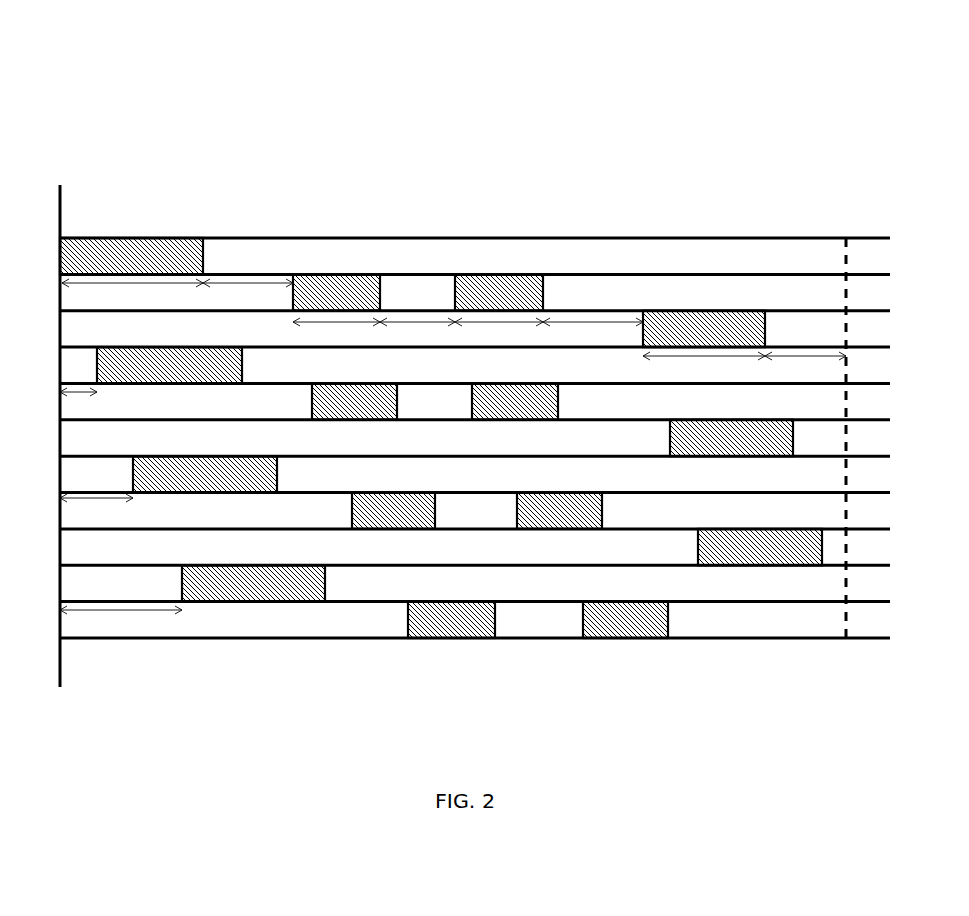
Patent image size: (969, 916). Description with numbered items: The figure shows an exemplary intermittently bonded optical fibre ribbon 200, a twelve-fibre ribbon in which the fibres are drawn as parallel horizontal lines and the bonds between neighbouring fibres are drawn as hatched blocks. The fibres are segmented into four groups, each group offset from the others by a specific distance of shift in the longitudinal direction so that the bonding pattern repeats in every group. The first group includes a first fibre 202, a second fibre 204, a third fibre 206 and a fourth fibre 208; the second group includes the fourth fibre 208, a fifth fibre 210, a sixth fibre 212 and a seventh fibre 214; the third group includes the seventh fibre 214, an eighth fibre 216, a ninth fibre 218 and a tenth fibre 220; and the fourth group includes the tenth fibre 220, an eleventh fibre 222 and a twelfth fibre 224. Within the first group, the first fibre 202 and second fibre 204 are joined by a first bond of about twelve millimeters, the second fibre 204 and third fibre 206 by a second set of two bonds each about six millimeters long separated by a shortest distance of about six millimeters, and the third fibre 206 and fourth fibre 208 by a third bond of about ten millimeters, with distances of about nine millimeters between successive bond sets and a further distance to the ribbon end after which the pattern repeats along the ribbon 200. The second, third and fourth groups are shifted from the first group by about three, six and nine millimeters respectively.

The intermittently bonded optical fibre ribbon 200 is at (449, 352).
The first fibre 202 is at (43, 245).
The second fibre 204 is at (43, 281).
The third fibre 206 is at (43, 318).
The fourth fibre 208 is at (43, 354).
The fifth fibre 210 is at (43, 390).
The sixth fibre 212 is at (43, 427).
The seventh fibre 214 is at (43, 463).
The eighth fibre 216 is at (43, 499).
The ninth fibre 218 is at (43, 536).
The tenth fibre 220 is at (43, 572).
The eleventh fibre 222 is at (43, 608).
The twelfth fibre 224 is at (43, 645).